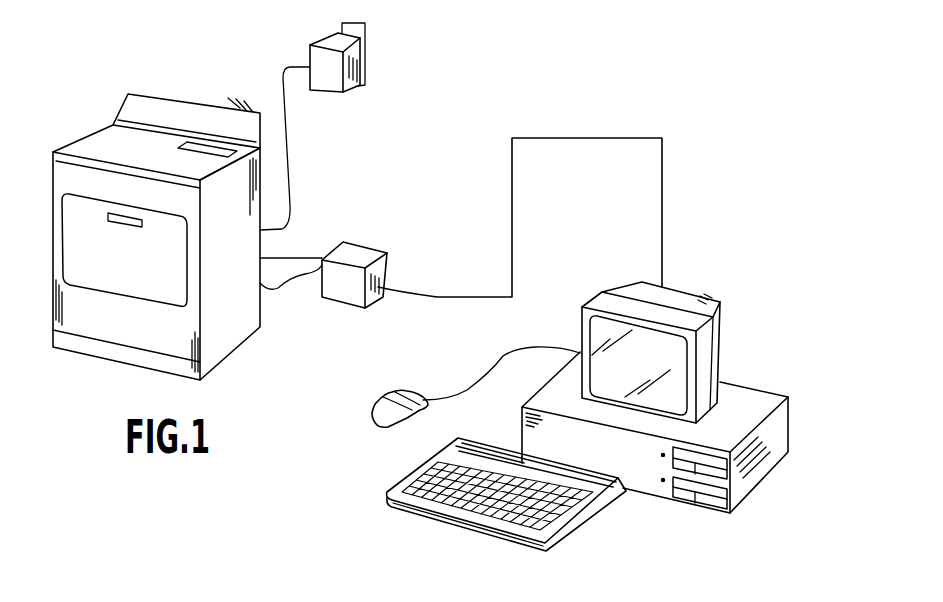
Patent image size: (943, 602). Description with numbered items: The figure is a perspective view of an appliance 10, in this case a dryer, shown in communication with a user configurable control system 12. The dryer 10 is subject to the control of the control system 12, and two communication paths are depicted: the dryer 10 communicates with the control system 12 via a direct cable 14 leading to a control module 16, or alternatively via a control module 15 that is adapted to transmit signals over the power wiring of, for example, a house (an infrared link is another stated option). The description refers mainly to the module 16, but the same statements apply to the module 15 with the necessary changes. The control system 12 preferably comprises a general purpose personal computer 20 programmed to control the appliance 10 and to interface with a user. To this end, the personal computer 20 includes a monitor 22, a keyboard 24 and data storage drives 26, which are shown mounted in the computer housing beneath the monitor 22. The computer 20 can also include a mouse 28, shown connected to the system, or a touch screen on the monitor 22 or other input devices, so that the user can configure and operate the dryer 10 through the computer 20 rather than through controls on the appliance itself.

The appliance 10 is at (247, 327).
The control system 12 is at (707, 247).
The direct cable 14 is at (440, 293).
The control module 15 is at (350, 82).
The control module 16 is at (360, 255).
The personal computer 20 is at (643, 477).
The monitor 22 is at (673, 377).
The keyboard 24 is at (463, 503).
The data storage drives 26 is at (713, 468).
The mouse 28 is at (382, 412).